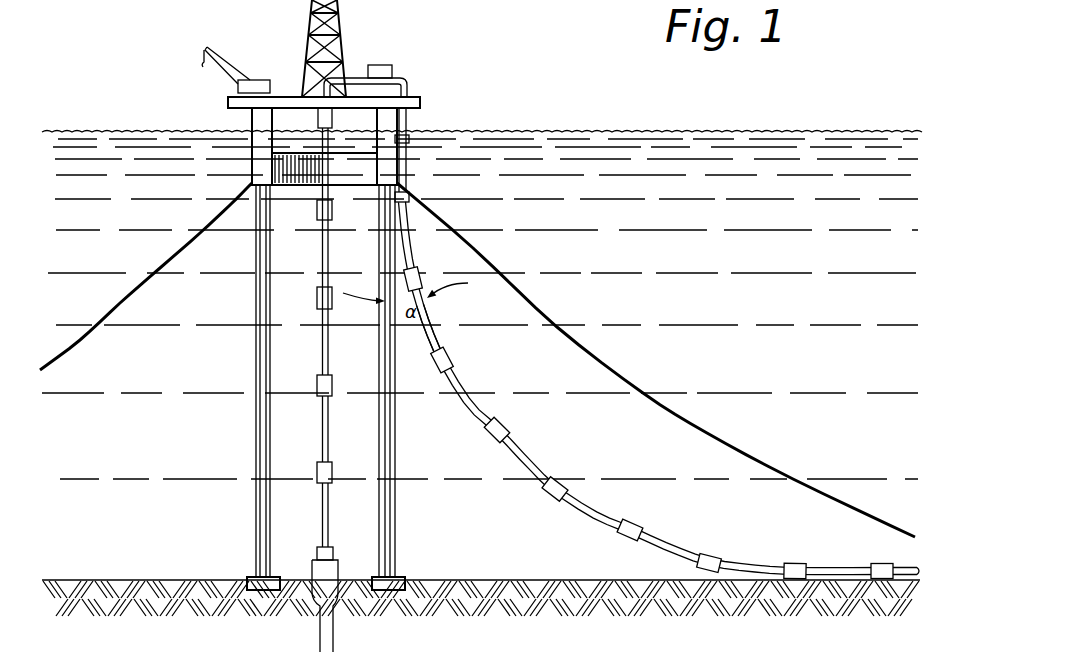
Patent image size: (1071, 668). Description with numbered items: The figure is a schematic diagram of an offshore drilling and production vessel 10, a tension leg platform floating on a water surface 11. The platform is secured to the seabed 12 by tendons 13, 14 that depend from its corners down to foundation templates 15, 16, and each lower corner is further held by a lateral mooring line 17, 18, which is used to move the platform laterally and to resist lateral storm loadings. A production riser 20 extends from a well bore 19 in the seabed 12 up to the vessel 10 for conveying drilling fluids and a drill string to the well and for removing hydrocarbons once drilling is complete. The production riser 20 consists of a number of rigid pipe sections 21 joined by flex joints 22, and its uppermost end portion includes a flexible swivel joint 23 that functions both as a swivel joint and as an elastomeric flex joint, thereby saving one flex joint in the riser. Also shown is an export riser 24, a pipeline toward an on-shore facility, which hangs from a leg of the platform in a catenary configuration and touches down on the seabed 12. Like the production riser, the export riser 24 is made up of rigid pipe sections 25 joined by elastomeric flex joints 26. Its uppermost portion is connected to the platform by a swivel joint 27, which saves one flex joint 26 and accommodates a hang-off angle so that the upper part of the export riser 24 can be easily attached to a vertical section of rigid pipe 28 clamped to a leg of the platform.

The offshore drilling and production vessel 10 is at (400, 32).
The water surface 11 is at (543, 131).
The seabed 12 is at (541, 579).
The tendon 13 is at (256, 417).
The tendon 14 is at (266, 455).
The foundation template 15 is at (248, 578).
The foundation template 16 is at (404, 578).
The lateral mooring line 17 is at (176, 254).
The lateral mooring line 18 is at (474, 249).
The well bore 19 is at (337, 597).
The production riser 20 is at (340, 440).
The rigid pipe section 21 is at (320, 339).
The flex joint 22 is at (317, 385).
The flexible swivel joint 23 is at (320, 118).
The export riser 24 is at (530, 447).
The rigid pipe section 25 is at (436, 334).
The elastomeric flex joint 26 is at (454, 358).
The swivel joint 27 is at (410, 203).
The vertical section of rigid pipe 28 is at (406, 164).